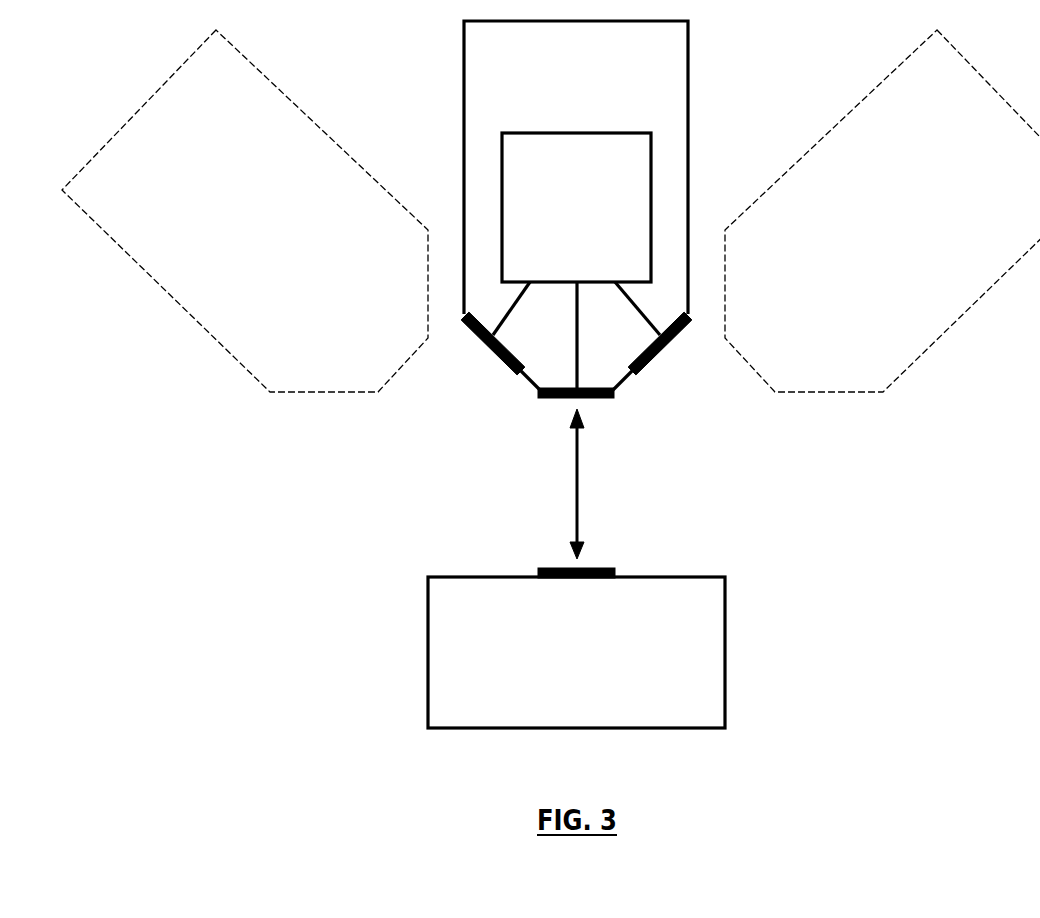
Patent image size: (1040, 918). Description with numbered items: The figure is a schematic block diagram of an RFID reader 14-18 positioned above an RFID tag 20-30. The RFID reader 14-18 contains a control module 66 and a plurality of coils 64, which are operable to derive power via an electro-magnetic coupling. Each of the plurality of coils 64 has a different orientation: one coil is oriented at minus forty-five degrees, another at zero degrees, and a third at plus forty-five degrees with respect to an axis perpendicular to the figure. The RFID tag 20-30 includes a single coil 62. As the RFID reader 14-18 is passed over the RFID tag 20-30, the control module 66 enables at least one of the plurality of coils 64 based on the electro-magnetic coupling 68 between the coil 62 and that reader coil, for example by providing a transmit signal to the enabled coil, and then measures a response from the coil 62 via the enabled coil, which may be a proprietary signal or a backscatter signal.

The RFID reader 14-18 is at (608, 86).
The control module 66 is at (635, 234).
The plurality of coils 64 is at (662, 352).
The electro-magnetic coupling 68 is at (577, 505).
The coil 62 is at (448, 554).
The RFID tag 20-30 is at (660, 666).